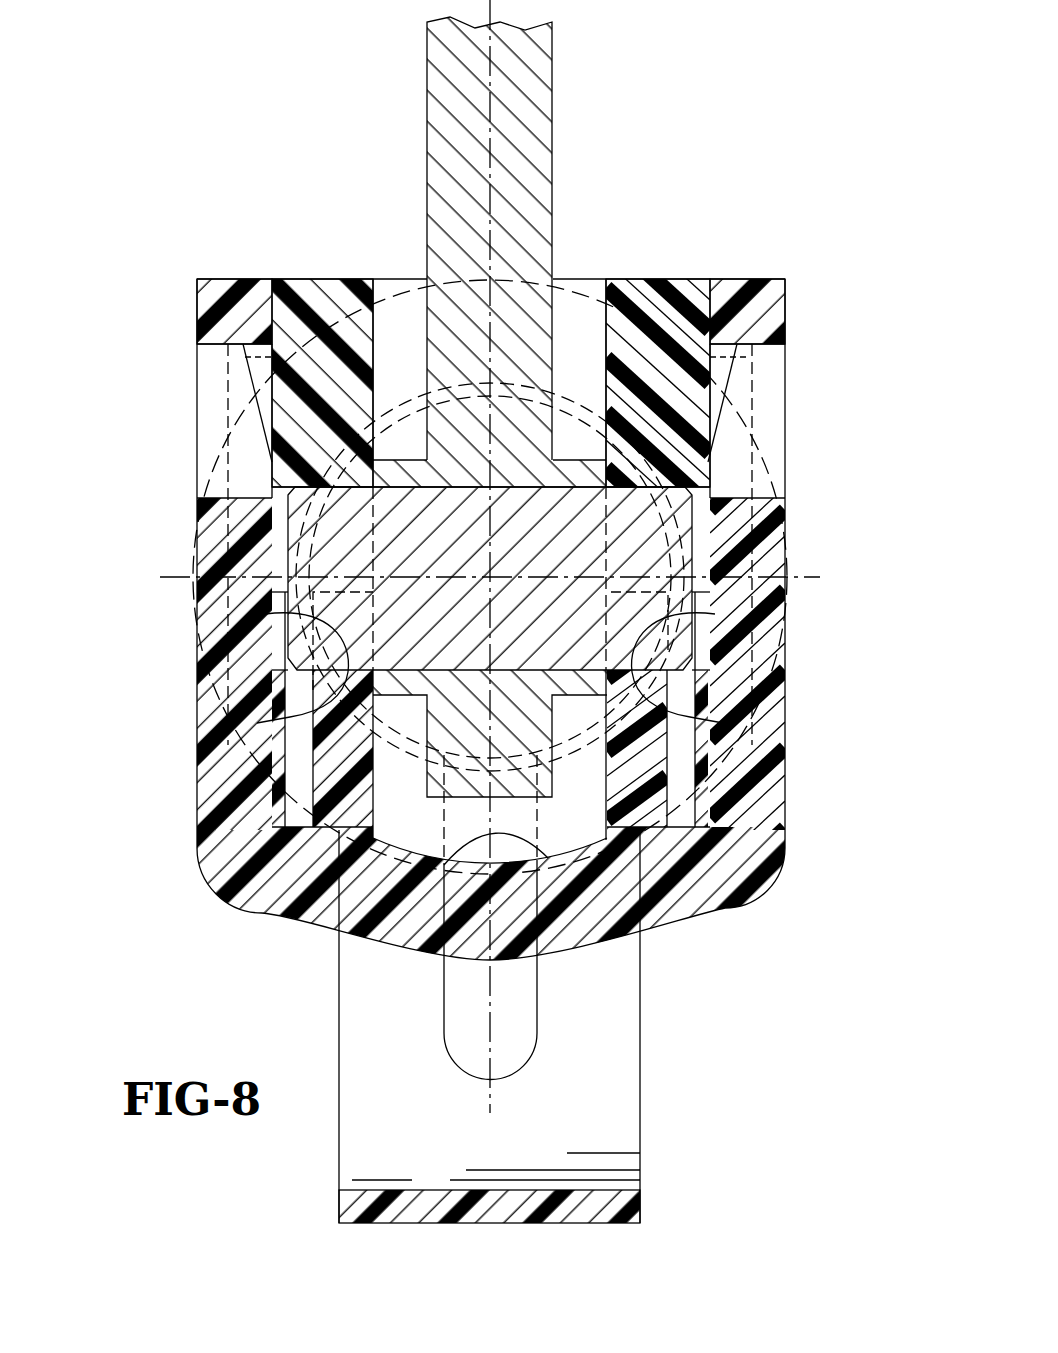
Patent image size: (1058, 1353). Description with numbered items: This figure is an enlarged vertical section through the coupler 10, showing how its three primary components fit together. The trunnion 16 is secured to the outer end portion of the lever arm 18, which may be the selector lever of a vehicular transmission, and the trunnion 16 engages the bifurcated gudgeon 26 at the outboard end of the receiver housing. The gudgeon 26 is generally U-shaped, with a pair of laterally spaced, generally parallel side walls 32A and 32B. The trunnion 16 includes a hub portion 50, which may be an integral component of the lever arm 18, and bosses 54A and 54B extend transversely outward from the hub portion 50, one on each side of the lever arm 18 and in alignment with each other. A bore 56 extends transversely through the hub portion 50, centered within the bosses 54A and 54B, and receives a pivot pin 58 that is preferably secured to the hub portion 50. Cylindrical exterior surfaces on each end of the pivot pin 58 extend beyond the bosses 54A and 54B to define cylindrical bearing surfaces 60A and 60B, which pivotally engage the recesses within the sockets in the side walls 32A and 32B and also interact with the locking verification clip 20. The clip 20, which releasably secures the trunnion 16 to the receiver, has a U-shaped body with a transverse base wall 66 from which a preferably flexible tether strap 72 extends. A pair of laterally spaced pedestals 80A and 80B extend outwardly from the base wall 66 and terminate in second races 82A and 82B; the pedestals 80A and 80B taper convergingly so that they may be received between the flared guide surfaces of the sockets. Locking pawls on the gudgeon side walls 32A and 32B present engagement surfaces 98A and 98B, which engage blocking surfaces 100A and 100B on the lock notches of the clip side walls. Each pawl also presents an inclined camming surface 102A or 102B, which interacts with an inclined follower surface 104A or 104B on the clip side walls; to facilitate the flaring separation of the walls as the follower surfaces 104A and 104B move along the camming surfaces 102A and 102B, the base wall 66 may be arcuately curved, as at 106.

The coupler 10 is at (148, 238).
The trunnion 16 is at (640, 526).
The lever arm 18 is at (533, 60).
The locking verification clip 20 is at (775, 890).
The bifurcated gudgeon 26 is at (680, 270).
The side wall 32A is at (317, 298).
The side wall 32B is at (653, 298).
The hub portion 50 is at (404, 711).
The boss 54A is at (407, 458).
The boss 54B is at (578, 458).
The bore 56 is at (395, 485).
The pivot pin 58 is at (642, 558).
The cylindrical bearing surface 60A is at (257, 723).
The cylindrical bearing surface 60B is at (723, 723).
The transverse base wall 66 is at (573, 918).
The tether strap 72 is at (437, 1213).
The pedestal 80A is at (320, 752).
The pedestal 80B is at (660, 752).
The second race 82A is at (265, 614).
The second race 82B is at (715, 614).
The engagement surface 98A is at (247, 340).
The engagement surface 98B is at (727, 343).
The blocking surface 100A is at (210, 347).
The blocking surface 100B is at (765, 340).
The inclined camming surface 102A is at (250, 398).
The inclined camming surface 102B is at (740, 398).
The inclined follower surface 104A is at (262, 298).
The inclined follower surface 104B is at (722, 300).
The arcuate curve 106 is at (463, 840).